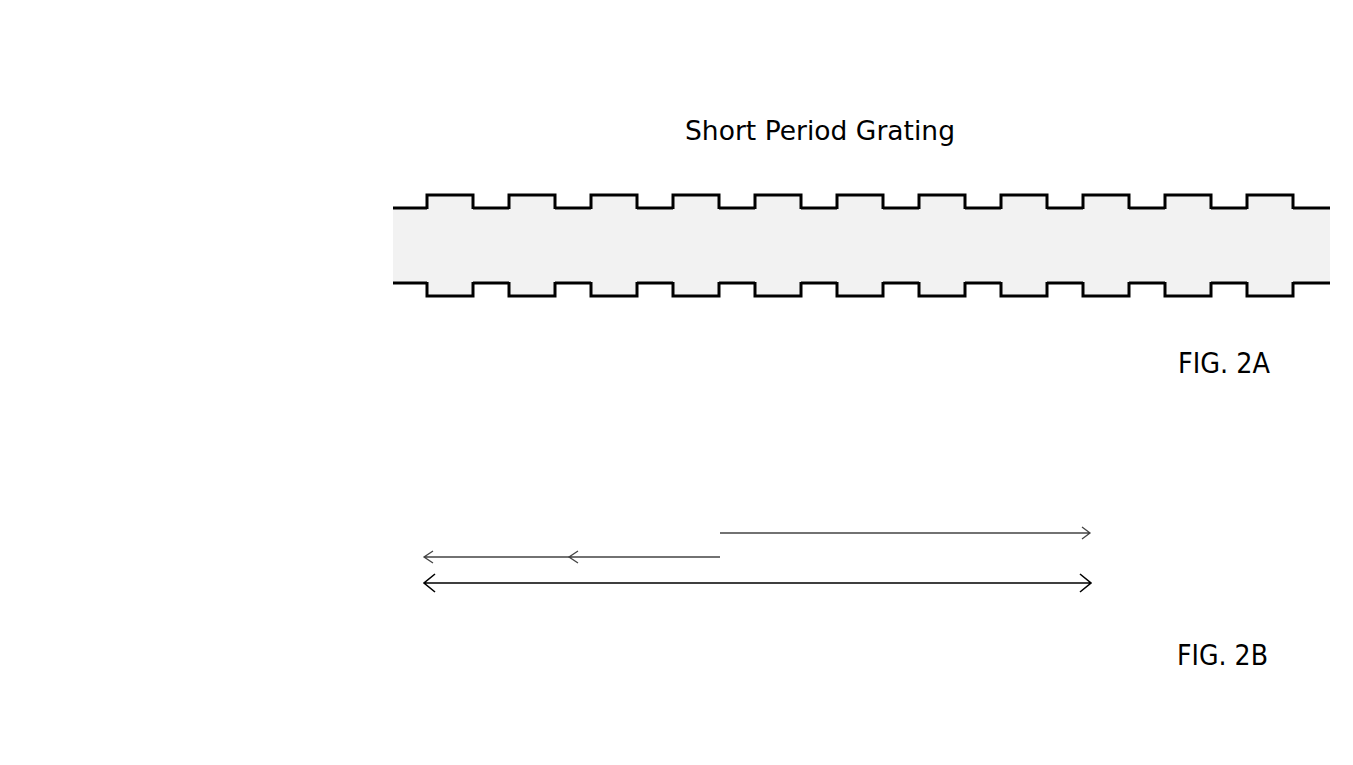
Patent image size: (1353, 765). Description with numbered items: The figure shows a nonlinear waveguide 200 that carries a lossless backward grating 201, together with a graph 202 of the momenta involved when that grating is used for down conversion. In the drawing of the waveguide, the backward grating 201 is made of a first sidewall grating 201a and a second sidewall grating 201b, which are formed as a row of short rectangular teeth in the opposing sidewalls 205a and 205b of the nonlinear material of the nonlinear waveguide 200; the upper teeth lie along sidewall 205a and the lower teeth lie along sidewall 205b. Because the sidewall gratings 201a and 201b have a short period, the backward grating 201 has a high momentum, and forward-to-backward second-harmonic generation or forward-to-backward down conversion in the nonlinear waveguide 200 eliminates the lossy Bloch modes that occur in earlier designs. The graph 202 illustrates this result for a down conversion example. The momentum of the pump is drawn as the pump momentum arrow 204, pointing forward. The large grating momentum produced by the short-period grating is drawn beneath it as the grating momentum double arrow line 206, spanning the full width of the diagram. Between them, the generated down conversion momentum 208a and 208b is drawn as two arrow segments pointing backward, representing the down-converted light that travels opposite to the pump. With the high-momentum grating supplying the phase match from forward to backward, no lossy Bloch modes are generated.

In FIG. 2A, the nonlinear waveguide 200 is at (1256, 153).
In FIG. 2A, the backward grating 201 is at (370, 297).
In FIG. 2A, the first sidewall grating 201a is at (393, 186).
In FIG. 2A, the second sidewall grating 201b is at (400, 303).
In FIG. 2A, the sidewall 205a is at (488, 200).
In FIG. 2A, the sidewall 205b is at (478, 283).
In FIG. 2B, the graph 202 is at (356, 528).
In FIG. 2B, the pump momentum arrow 204 is at (890, 532).
In FIG. 2B, the grating momentum double arrow line 206 is at (875, 587).
In FIG. 2B, the down conversion momentum 208a is at (502, 557).
In FIG. 2B, the down conversion momentum 208b is at (645, 558).